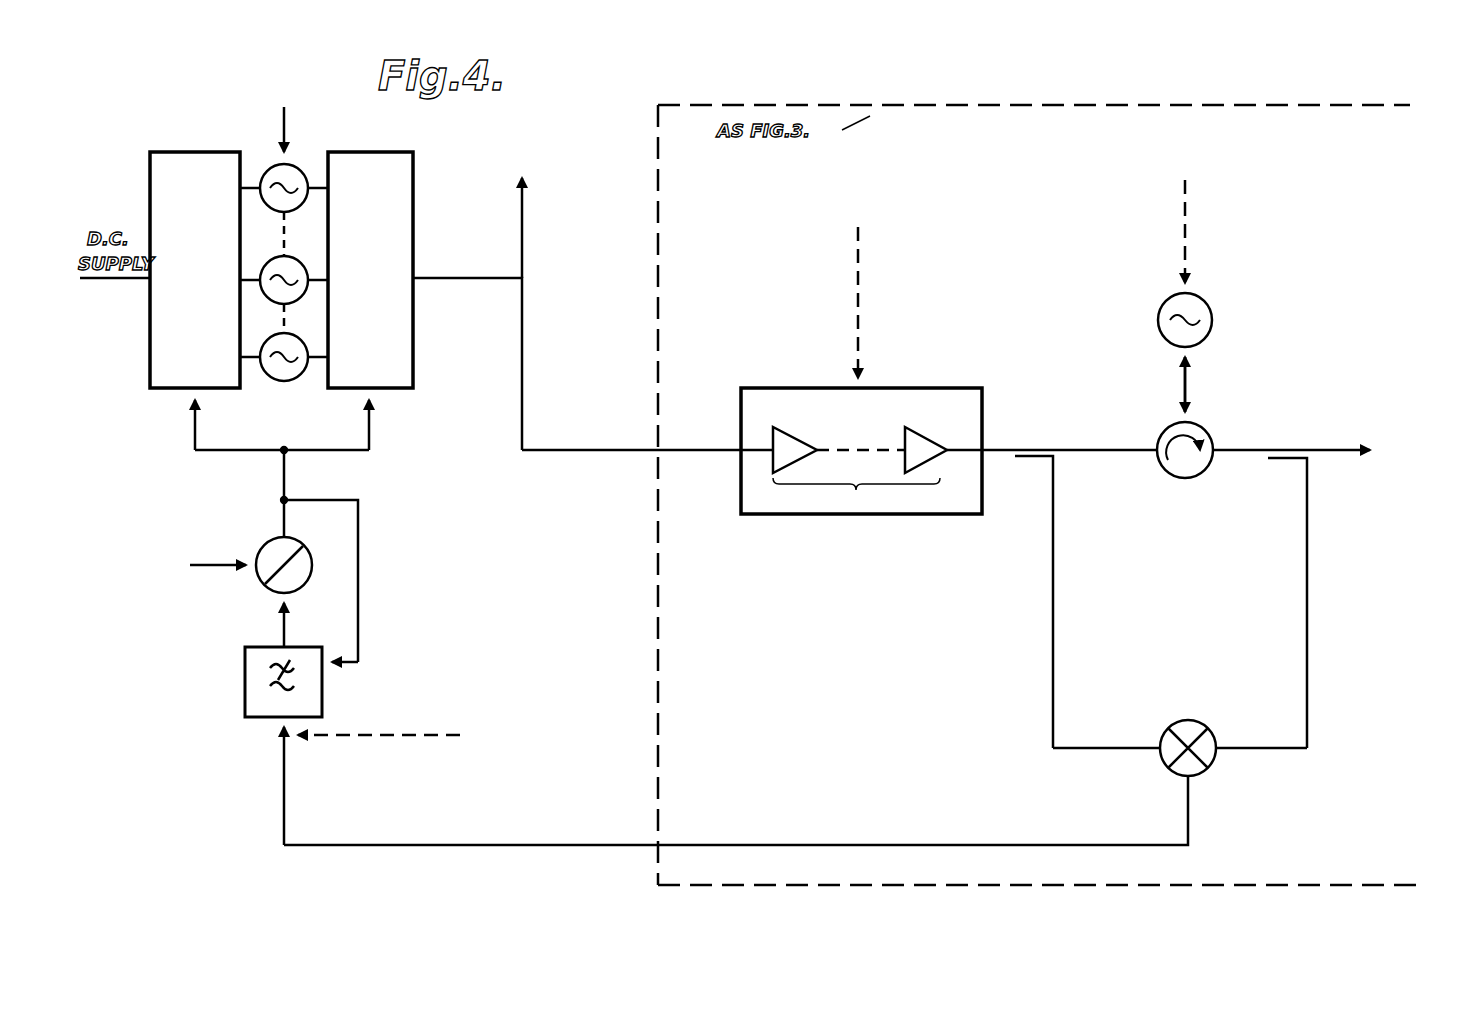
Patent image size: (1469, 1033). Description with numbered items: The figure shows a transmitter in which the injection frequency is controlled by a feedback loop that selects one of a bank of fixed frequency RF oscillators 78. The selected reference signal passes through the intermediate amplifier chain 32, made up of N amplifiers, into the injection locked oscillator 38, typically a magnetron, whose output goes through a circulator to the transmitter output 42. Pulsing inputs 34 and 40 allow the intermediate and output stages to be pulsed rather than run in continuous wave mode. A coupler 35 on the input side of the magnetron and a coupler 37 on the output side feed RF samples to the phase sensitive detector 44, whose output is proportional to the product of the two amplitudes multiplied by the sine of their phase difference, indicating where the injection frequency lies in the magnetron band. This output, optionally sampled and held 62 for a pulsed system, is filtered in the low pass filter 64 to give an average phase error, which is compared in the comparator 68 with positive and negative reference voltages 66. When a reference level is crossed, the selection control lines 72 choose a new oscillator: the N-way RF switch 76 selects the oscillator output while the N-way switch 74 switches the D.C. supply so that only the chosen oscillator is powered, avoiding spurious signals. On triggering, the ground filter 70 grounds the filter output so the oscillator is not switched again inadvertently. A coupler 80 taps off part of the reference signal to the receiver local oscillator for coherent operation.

The intermediate amplifier chain 32 is at (757, 516).
The pulsing input 34 is at (860, 277).
The coupler 35 is at (1030, 450).
The coupler 37 is at (1300, 440).
The injection locked oscillator 38 is at (1213, 325).
The pulsing input 40 is at (1187, 237).
The transmitter output 42 is at (1352, 458).
The phase sensitive detector 44 is at (1172, 777).
The sample and hold 62 is at (406, 738).
The low pass filter 64 is at (322, 693).
The positive and negative reference voltages 66 is at (190, 566).
The comparator 68 is at (300, 590).
The ground filter 70 is at (358, 597).
The selection control lines 72 is at (288, 447).
The N-way switch 74 is at (200, 152).
The N-way RF switch 76 is at (382, 152).
The RF oscillators 78 is at (287, 108).
The coupler 80 is at (522, 267).